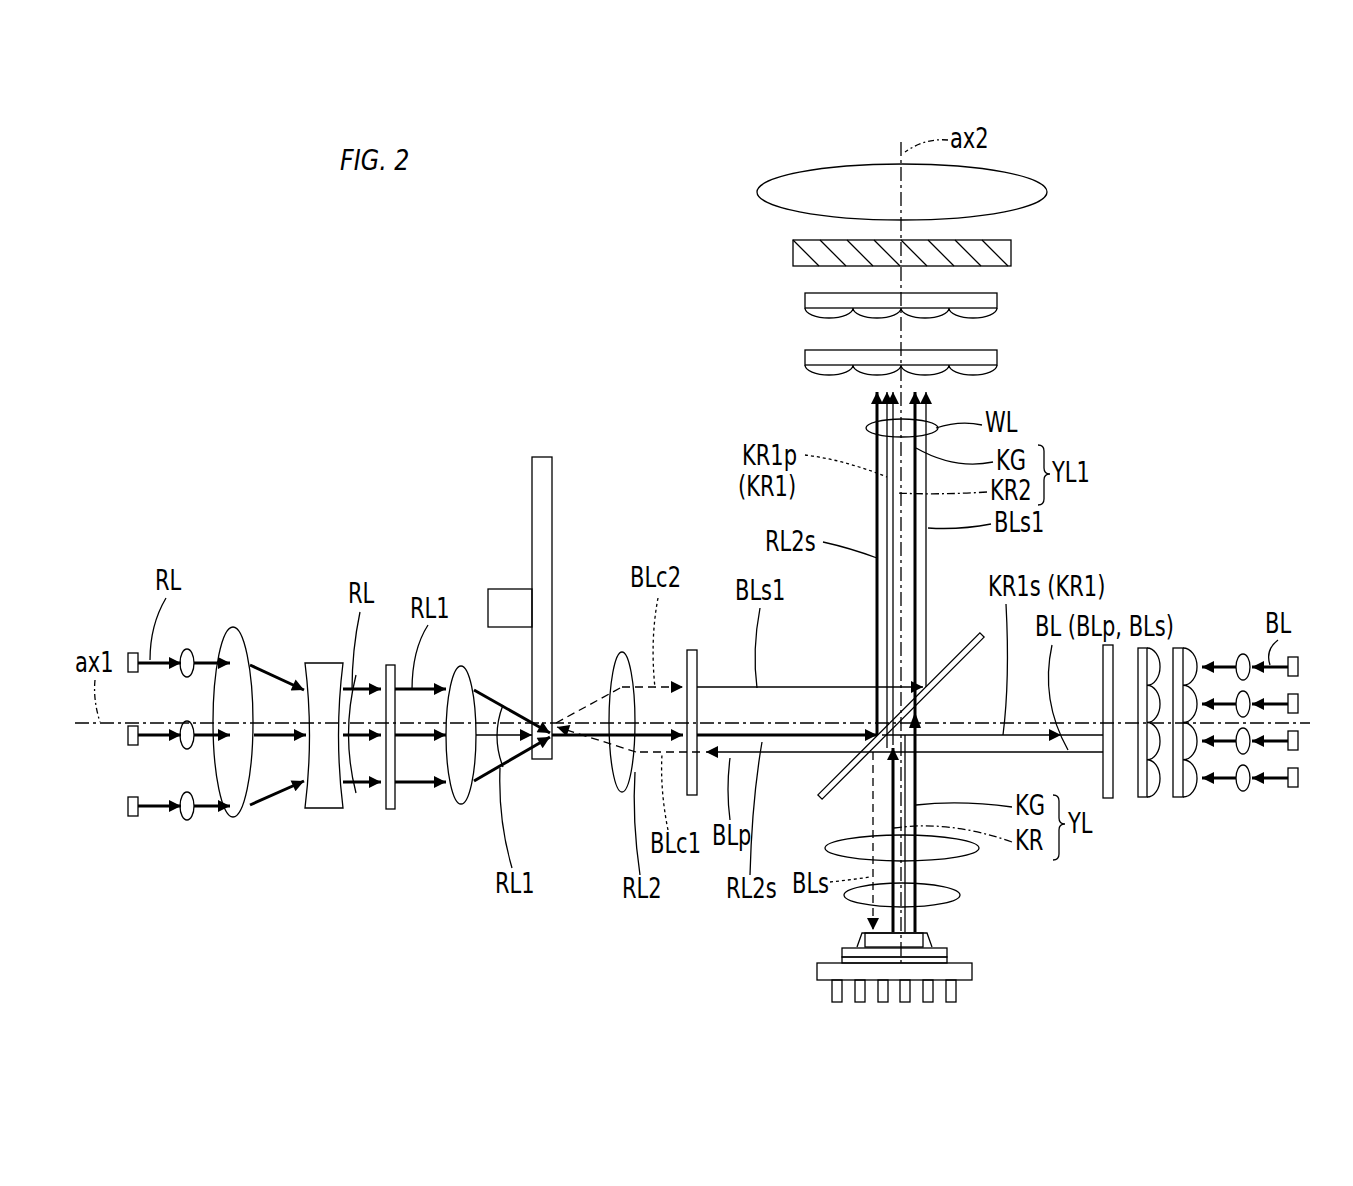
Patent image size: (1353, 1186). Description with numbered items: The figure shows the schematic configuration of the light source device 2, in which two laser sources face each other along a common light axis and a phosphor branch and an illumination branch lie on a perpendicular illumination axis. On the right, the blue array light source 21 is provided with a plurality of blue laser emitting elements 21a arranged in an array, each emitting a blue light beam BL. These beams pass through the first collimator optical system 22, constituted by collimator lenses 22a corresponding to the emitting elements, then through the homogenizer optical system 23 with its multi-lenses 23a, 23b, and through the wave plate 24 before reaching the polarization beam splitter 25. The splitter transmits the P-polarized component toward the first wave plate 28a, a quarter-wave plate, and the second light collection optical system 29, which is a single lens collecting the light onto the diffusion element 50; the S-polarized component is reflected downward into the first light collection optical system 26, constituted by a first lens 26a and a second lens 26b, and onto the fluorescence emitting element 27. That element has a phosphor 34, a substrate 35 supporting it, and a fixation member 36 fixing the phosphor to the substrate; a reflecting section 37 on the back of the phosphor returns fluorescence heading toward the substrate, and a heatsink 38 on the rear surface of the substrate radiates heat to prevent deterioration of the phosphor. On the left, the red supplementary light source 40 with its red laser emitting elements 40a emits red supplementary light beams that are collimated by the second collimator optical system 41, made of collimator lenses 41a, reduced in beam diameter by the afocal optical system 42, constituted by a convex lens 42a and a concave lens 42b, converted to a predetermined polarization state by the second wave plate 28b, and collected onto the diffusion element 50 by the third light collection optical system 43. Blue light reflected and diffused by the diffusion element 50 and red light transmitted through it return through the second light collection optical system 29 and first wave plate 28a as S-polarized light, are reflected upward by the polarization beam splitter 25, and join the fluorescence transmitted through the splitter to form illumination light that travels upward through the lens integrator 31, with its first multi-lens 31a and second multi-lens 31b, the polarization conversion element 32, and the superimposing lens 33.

The light source device 2 is at (1232, 220).
The blue array light source 21 is at (1294, 650).
The blue laser emitting element 21a is at (1295, 789).
The first collimator optical system 22 is at (1243, 652).
The collimator lens 22a is at (1243, 793).
The homogenizer optical system 23 is at (1181, 779).
The multi-lens 23a is at (1190, 798).
The multi-lens 23b is at (1146, 800).
The wave plate 24 is at (1108, 800).
The polarization beam splitter 25 is at (822, 797).
The first light collection optical system 26 is at (957, 886).
The first lens 26a is at (957, 863).
The second lens 26b is at (945, 906).
The fluorescence emitting element 27 is at (909, 953).
The first wave plate 28a is at (692, 650).
The second wave plate 28b is at (390, 809).
The second light collection optical system 29 is at (615, 670).
The lens integrator 31 is at (978, 325).
The first multi-lens 31a is at (998, 357).
The second multi-lens 31b is at (998, 300).
The polarization conversion element 32 is at (1012, 254).
The superimposing lens 33 is at (1030, 175).
The phosphor 34 is at (862, 936).
The substrate 35 is at (846, 950).
The fixation member 36 is at (932, 942).
The reflecting section 37 is at (846, 960).
The heatsink 38 is at (820, 970).
The red supplementary light source 40 is at (133, 820).
The red laser emitting element 40a is at (133, 650).
The second collimator optical system 41 is at (189, 822).
The collimator lens 41a is at (190, 650).
The afocal optical system 42 is at (278, 783).
The convex lens 42a is at (240, 817).
The concave lens 42b is at (318, 808).
The third light collection optical system 43 is at (458, 800).
The diffusion element 50 is at (541, 762).